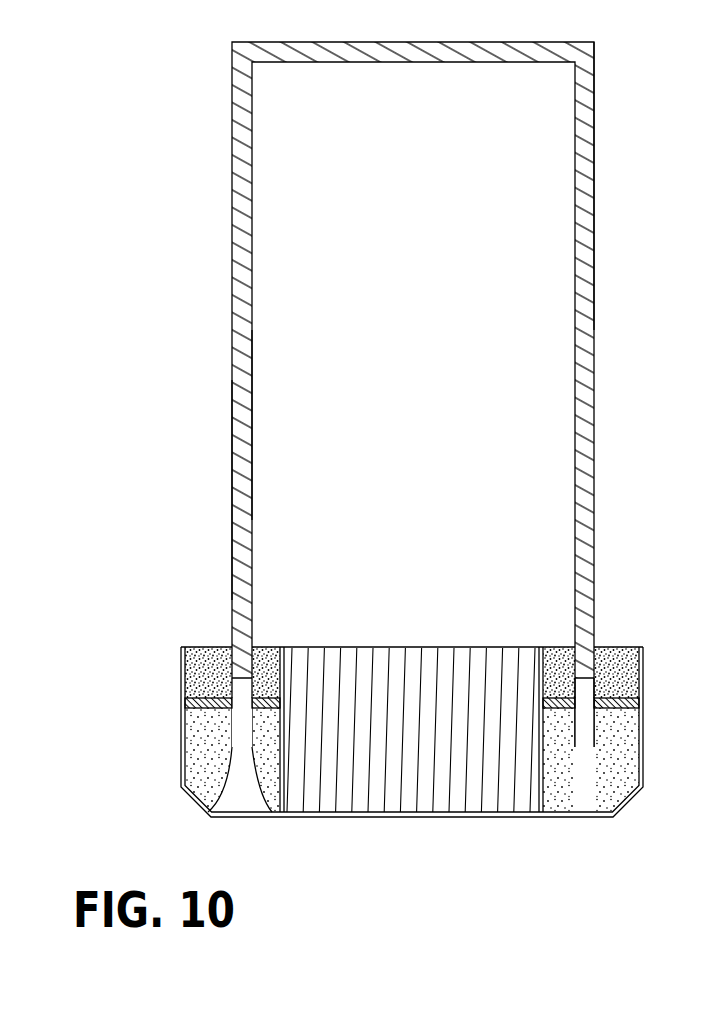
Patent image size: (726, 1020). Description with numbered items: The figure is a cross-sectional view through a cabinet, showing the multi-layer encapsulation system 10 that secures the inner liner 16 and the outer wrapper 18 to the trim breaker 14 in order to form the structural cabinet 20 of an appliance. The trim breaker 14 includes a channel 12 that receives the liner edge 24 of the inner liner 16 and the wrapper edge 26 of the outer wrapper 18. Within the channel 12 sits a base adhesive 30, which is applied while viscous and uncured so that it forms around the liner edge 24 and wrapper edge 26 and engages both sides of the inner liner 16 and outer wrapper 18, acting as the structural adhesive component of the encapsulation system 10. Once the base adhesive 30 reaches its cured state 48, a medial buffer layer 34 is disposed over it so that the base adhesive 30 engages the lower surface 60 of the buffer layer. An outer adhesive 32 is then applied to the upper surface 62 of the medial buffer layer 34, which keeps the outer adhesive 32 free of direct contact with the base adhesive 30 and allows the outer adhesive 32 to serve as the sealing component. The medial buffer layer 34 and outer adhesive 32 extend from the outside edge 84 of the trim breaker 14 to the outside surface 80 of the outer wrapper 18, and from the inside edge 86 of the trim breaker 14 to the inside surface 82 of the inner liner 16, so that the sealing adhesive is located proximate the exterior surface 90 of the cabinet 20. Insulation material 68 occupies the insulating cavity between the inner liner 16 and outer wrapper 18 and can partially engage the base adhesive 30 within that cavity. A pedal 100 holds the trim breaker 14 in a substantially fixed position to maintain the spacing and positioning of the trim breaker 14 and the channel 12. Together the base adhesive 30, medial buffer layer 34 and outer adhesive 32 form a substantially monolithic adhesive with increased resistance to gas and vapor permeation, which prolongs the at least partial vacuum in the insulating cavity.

The multi-layer encapsulation system 10 is at (396, 462).
The channel 12 is at (620, 646).
The trim breaker 14 is at (397, 706).
The inner liner 16 is at (253, 342).
The outer wrapper 18 is at (232, 277).
The structural cabinet 20 is at (378, 394).
The liner edge 24 is at (270, 814).
The wrapper edge 26 is at (208, 814).
The base adhesive 30 is at (580, 773).
The outer adhesive 32 is at (620, 672).
The medial buffer layer 34 is at (185, 703).
The cured state 48 is at (268, 647).
The lower surface 60 is at (207, 715).
The upper surface 62 is at (220, 692).
The insulation material 68 is at (232, 183).
The outside surface 80 is at (232, 473).
The inside surface 82 is at (252, 427).
The outside edge 84 is at (182, 693).
The inside edge 86 is at (282, 647).
The exterior surface 90 is at (595, 86).
The pedal 100 is at (410, 788).